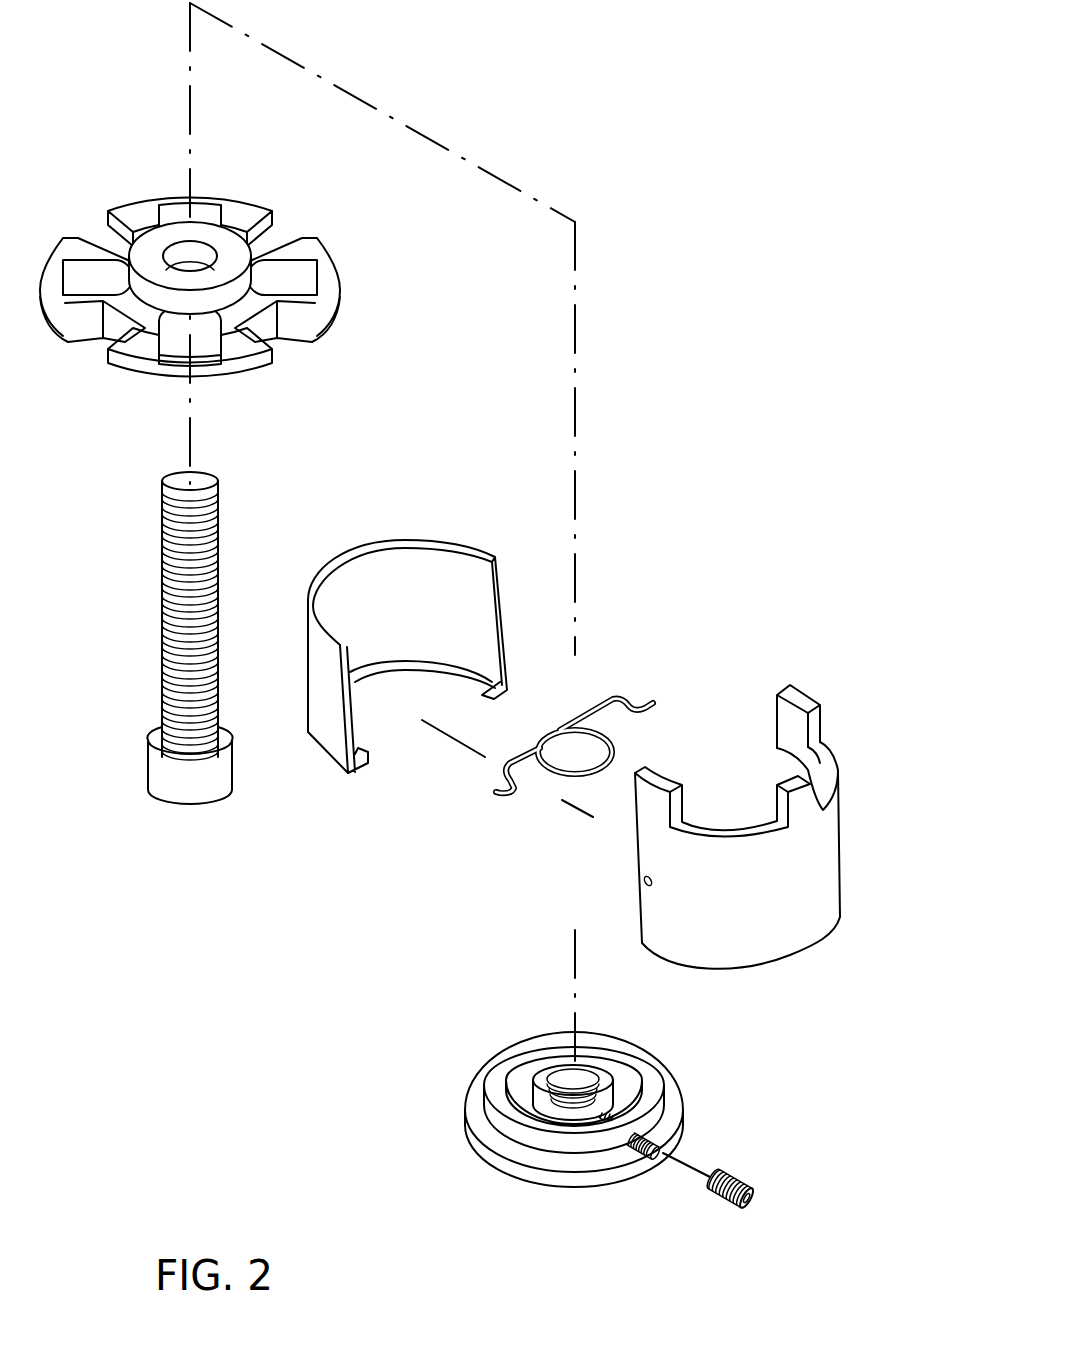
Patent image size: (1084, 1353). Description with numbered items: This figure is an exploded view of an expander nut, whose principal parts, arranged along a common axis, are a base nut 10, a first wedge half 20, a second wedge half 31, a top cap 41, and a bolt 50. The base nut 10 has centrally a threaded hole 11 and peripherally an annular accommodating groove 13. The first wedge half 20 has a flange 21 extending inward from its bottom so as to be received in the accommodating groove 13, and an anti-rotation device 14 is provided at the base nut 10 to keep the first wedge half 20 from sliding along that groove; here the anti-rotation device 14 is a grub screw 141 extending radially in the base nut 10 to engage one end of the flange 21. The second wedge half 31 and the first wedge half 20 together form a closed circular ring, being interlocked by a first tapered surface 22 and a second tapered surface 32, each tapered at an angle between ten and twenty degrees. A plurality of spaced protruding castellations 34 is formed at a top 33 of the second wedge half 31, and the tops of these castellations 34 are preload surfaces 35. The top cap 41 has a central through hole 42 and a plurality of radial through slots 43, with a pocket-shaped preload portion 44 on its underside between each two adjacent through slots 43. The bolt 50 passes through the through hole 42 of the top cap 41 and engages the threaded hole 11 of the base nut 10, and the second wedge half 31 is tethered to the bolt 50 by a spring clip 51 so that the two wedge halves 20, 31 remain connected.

The base nut 10 is at (593, 1089).
The threaded hole 11 is at (605, 1081).
The annular accommodating groove 13 is at (575, 1156).
The anti-rotation device 14 is at (733, 1180).
The grub screw 141 is at (724, 1206).
The first wedge half 20 is at (444, 634).
The flange 21 is at (400, 668).
The first tapered surface 22 is at (508, 620).
The second wedge half 31 is at (746, 770).
The second tapered surface 32 is at (778, 755).
The top of the second wedge half 33 is at (836, 770).
The protruding castellations 34 is at (798, 728).
The preload surfaces 35 is at (810, 698).
The top cap 41 is at (239, 260).
The through hole 42 is at (207, 247).
The through slots 43 is at (287, 331).
The pocket-shaped preload portion 44 is at (290, 277).
The bolt 50 is at (141, 527).
The torsion spring 51 is at (641, 675).